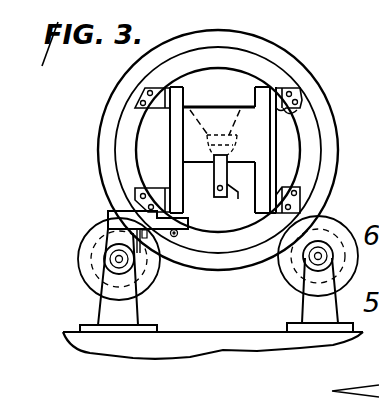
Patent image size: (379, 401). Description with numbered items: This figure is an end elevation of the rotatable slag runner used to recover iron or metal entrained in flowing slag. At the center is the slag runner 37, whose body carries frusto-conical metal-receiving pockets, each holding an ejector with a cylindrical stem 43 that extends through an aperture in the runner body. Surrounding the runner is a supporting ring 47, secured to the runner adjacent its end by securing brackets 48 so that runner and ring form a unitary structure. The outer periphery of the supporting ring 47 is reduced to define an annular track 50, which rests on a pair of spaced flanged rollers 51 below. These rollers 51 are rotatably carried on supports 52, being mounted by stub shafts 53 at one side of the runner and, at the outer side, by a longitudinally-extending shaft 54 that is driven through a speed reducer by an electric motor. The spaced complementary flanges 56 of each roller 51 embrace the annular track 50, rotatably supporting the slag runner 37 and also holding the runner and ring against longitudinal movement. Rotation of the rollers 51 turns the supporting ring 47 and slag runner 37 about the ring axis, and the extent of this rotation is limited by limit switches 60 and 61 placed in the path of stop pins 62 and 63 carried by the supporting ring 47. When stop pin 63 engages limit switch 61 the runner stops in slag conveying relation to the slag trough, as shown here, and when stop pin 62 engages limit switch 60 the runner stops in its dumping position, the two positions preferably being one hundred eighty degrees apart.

The slag runner 37 is at (274, 140).
The cylindrical stem 43 is at (233, 192).
The supporting ring 47 is at (255, 62).
The securing brackets 48 is at (143, 97).
The annular track 50 is at (262, 41).
The flanged rollers 51 is at (98, 267).
The supports 52 is at (113, 318).
The stub shafts 53 is at (317, 257).
The longitudinally-extending shaft 54 is at (116, 264).
The roller flanges 56 is at (100, 259).
The limit switch 60 is at (115, 211).
The limit switch 61 is at (112, 240).
The stop pin 62 is at (291, 101).
The stop pin 63 is at (186, 242).